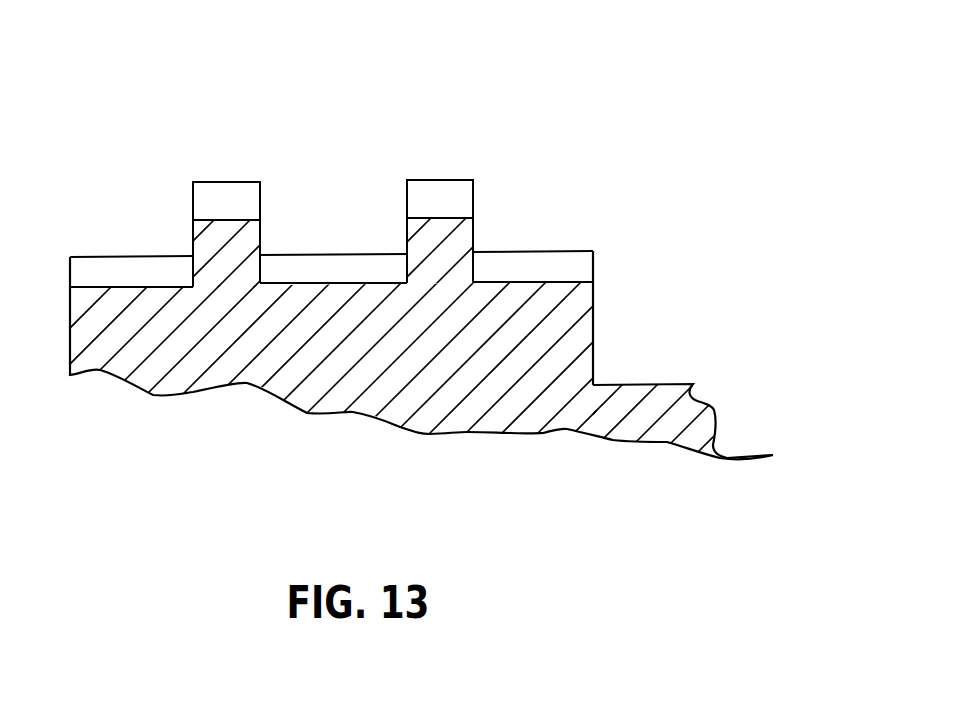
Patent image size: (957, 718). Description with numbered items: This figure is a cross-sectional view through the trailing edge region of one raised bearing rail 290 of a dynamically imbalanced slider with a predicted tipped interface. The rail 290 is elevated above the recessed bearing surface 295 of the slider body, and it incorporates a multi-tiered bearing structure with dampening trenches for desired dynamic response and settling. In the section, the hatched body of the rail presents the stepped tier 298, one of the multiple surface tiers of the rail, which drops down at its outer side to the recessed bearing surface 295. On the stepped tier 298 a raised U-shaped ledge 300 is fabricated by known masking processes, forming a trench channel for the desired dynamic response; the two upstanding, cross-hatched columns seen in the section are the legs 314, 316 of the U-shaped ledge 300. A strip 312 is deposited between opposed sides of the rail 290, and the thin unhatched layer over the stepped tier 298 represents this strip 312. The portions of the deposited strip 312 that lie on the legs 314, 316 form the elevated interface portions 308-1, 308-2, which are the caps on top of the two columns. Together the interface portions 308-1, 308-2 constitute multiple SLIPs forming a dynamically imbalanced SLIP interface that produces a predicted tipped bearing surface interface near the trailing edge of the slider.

The raised bearing rail 290 is at (622, 342).
The recessed bearing surface 295 is at (672, 383).
The stepped tier 298 is at (537, 303).
The U-shaped ledge 300 is at (493, 218).
The interface portion 308-1 is at (218, 156).
The interface portion 308-2 is at (455, 158).
The strip 312 is at (295, 268).
The leg 314 is at (207, 245).
The leg 316 is at (420, 242).